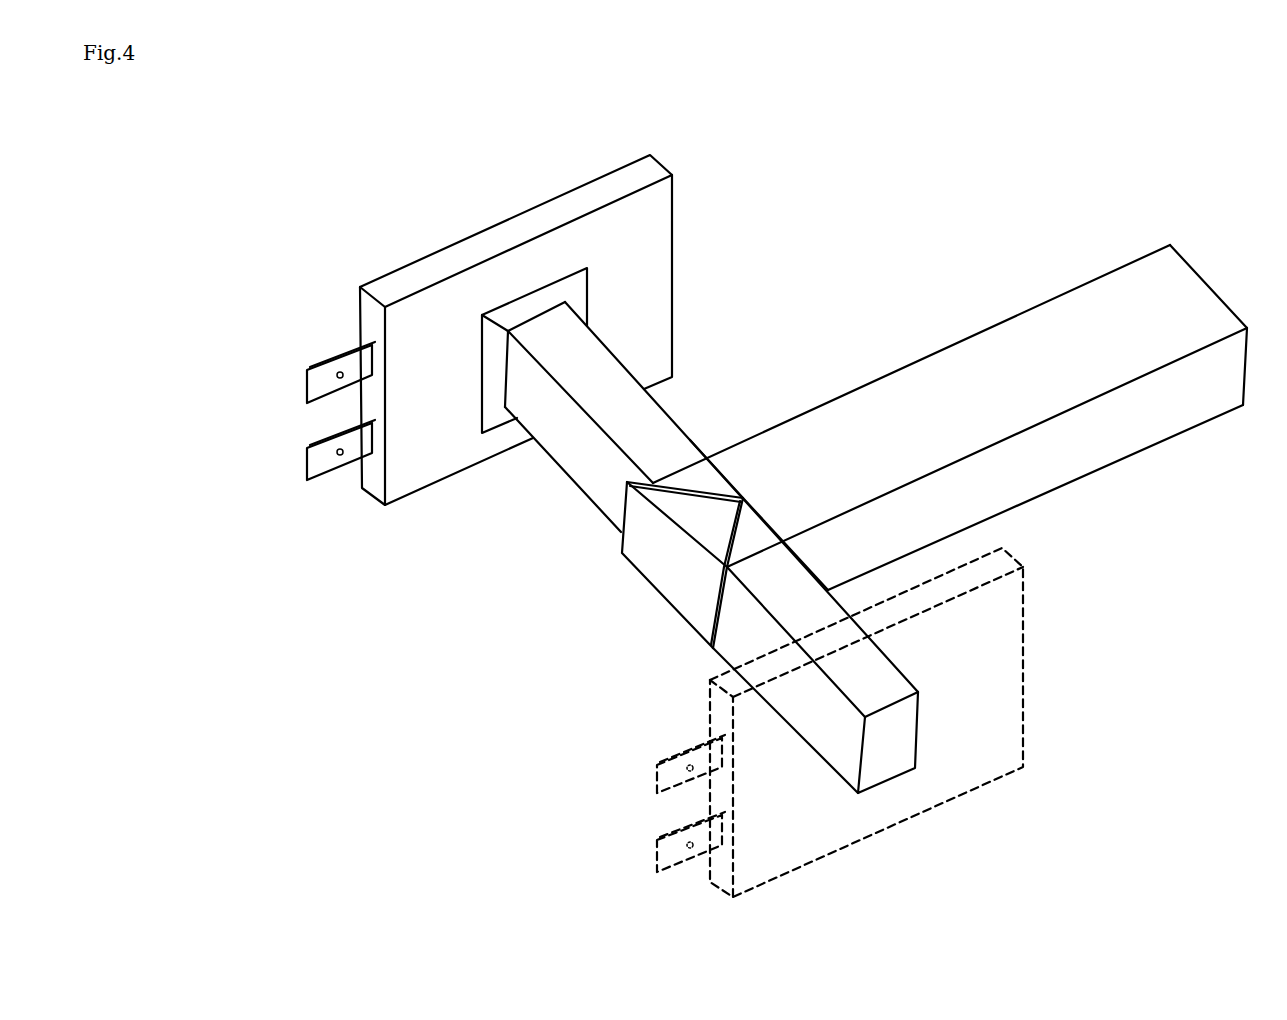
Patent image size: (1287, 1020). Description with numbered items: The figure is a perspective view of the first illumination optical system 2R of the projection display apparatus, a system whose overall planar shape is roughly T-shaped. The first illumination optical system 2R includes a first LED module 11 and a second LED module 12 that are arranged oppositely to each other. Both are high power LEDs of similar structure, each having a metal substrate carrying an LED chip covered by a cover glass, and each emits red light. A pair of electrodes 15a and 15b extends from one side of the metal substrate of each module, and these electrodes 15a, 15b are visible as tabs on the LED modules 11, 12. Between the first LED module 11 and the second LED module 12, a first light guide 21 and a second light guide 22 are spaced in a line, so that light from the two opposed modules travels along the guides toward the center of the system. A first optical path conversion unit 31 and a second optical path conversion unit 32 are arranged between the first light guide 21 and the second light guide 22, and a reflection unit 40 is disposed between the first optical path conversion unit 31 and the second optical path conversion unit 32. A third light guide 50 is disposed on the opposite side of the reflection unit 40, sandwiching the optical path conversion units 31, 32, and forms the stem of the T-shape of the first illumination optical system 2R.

The first LED module 11 is at (1044, 710).
The second LED module 12 is at (559, 170).
The electrode 15a is at (348, 357).
The electrode 15b is at (333, 471).
The first light guide 21 is at (711, 547).
The second light guide 22 is at (672, 413).
The first illumination optical system 2R is at (950, 392).
The first optical path conversion unit 31 is at (757, 533).
The second optical path conversion unit 32 is at (715, 481).
The reflection unit 40 is at (652, 574).
The third light guide 50 is at (985, 348).